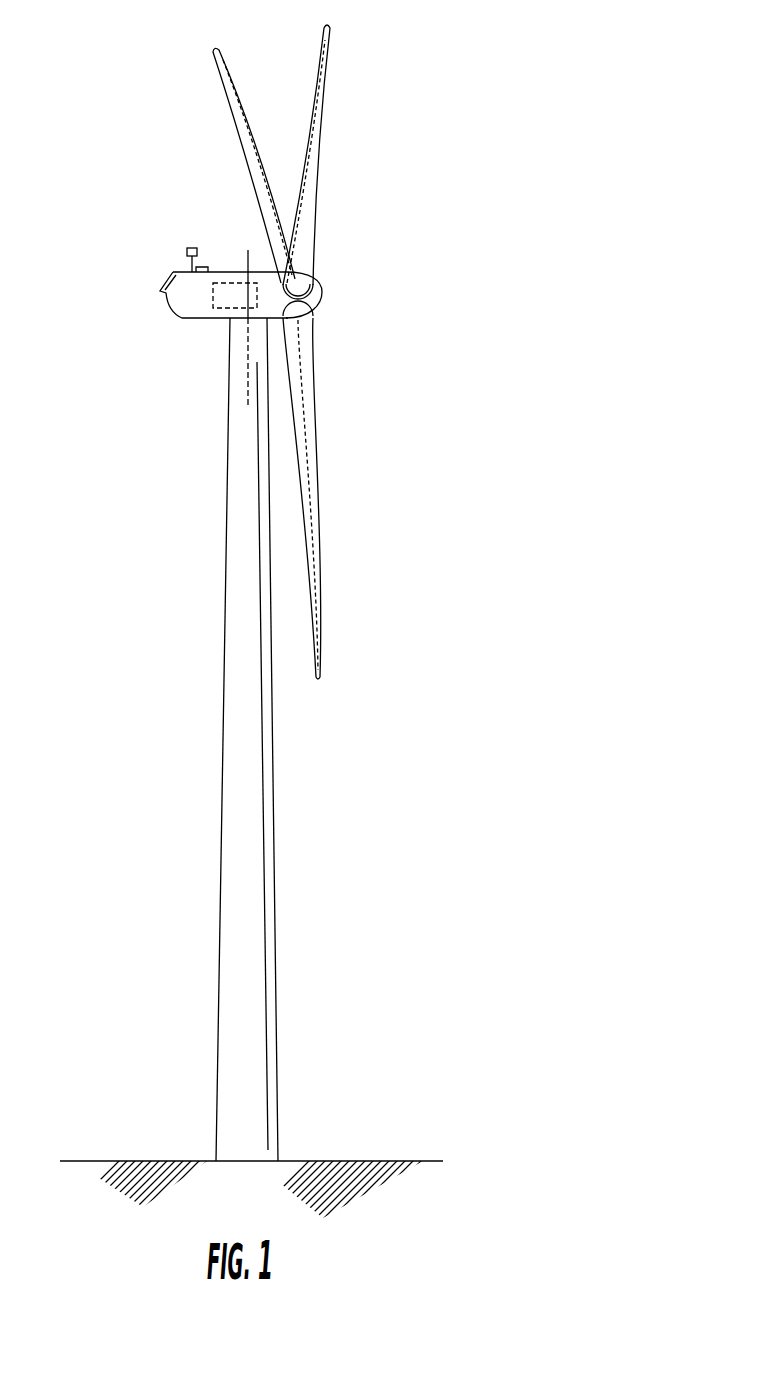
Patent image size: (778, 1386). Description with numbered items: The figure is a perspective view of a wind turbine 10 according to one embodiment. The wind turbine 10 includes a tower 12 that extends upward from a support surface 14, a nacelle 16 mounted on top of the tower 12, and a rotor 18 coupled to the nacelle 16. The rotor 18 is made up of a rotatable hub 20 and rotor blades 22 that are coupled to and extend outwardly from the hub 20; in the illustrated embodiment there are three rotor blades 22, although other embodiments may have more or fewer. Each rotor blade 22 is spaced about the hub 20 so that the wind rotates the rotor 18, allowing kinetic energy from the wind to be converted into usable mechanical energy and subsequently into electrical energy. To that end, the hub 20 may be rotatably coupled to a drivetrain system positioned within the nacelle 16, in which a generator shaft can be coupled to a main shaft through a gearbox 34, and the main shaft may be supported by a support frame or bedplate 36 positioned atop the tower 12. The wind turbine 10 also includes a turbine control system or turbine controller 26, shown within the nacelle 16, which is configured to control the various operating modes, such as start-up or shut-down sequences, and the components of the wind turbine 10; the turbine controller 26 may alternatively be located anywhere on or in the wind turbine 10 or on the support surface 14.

The wind turbine 10 is at (275, 637).
The tower 12 is at (232, 852).
The support surface 14 is at (140, 1161).
The nacelle 16 is at (207, 320).
The rotor 18 is at (296, 352).
The rotatable hub 20 is at (323, 297).
The rotor blade 22 is at (312, 145).
The turbine controller 26 is at (238, 283).
The gearbox 34 is at (248, 158).
The bedplate 36 is at (250, 363).